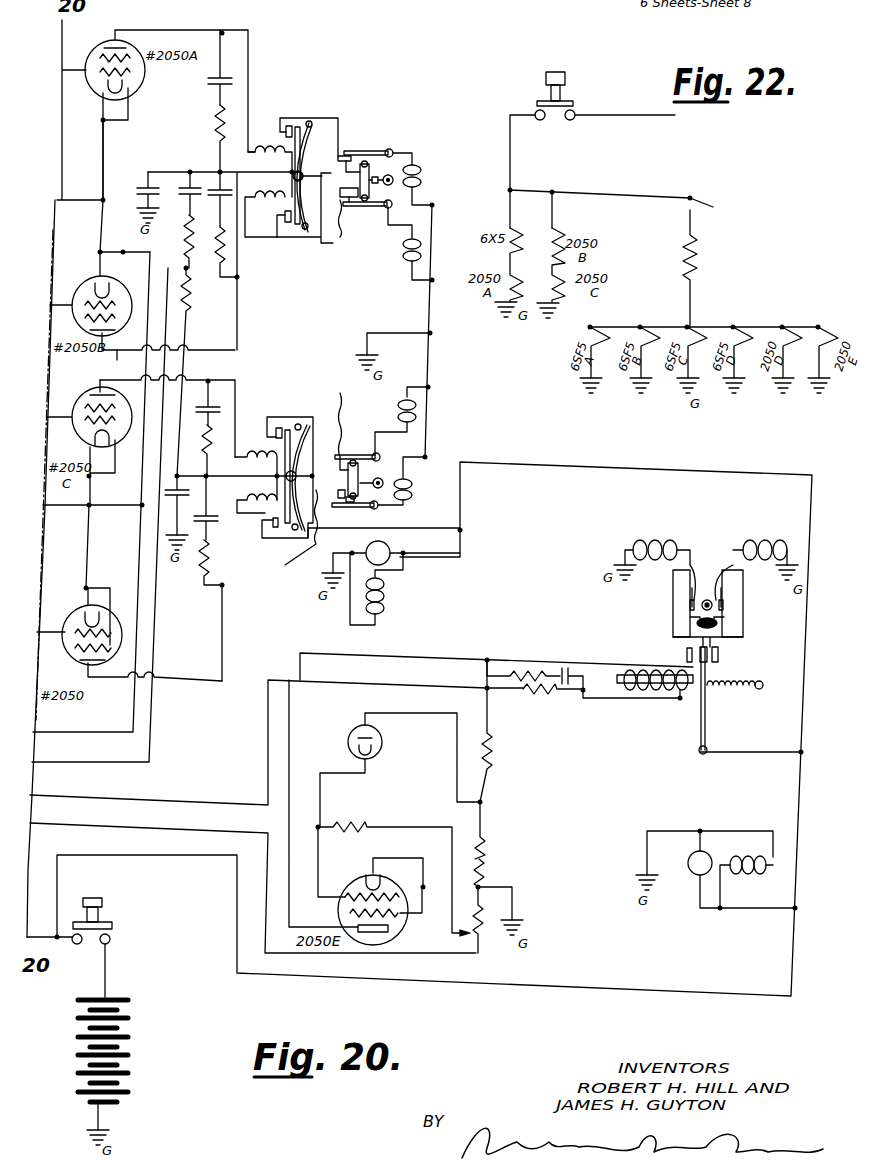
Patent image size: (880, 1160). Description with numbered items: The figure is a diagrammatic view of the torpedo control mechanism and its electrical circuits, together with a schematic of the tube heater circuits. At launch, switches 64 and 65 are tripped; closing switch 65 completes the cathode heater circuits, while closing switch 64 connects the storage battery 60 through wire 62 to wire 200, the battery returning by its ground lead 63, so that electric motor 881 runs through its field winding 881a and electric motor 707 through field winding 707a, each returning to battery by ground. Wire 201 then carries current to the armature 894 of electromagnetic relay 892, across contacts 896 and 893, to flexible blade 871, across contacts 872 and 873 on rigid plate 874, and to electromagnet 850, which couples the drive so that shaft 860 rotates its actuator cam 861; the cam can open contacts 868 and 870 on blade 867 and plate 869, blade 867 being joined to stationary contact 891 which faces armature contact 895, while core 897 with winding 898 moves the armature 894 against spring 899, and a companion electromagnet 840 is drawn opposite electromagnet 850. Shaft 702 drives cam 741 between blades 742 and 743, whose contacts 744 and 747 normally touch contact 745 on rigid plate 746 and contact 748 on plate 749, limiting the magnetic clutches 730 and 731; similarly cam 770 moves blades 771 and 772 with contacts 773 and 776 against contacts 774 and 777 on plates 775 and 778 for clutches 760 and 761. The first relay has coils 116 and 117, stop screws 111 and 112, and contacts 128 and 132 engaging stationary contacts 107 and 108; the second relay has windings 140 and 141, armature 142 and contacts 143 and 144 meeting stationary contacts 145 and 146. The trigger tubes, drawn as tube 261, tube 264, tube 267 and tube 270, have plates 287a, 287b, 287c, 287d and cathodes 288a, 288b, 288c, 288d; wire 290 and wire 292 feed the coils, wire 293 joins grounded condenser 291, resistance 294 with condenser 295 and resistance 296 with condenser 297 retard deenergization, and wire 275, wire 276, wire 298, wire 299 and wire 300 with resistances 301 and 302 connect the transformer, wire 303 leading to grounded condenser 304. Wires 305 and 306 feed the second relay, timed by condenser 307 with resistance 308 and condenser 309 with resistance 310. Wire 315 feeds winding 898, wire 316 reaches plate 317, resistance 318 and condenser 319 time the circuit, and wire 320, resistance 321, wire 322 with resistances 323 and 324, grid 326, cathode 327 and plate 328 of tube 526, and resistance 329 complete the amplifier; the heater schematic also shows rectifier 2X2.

In FIG. 20, the storage battery 60 is at (125, 1046).
In FIG. 20, the wire 62 is at (106, 968).
In FIG. 20, the ground lead 63 is at (104, 1118).
In FIG. 20, the switch 64 is at (98, 918).
In FIG. 22, the switch 65 is at (562, 93).
In FIG. 20, the stationary contact 107 is at (278, 132).
In FIG. 20, the stationary contact 108 is at (278, 220).
In FIG. 20, the stop screw 111 is at (312, 122).
In FIG. 20, the stop screw 112 is at (305, 230).
In FIG. 20, the relay coil 116 is at (279, 161).
In FIG. 20, the relay coil 117 is at (279, 184).
In FIG. 20, the contact 128 is at (297, 125).
In FIG. 20, the contact 132 is at (284, 240).
In FIG. 20, the relay winding 140 is at (268, 462).
In FIG. 20, the relay winding 141 is at (268, 482).
In FIG. 20, the armature 142 is at (305, 424).
In FIG. 20, the contact 143 is at (287, 428).
In FIG. 20, the contact 144 is at (296, 532).
In FIG. 20, the stationary contact 145 is at (272, 436).
In FIG. 20, the stationary contact 146 is at (270, 516).
In FIG. 20, the wire 200 is at (62, 890).
In FIG. 20, the wire 201 is at (735, 752).
In FIG. 20, the tube 261 is at (98, 85).
In FIG. 20, the tube 264 is at (88, 298).
In FIG. 20, the tube 267 is at (82, 404).
In FIG. 20, the tube 270 is at (78, 622).
In FIG. 20, the wire 275 is at (105, 160).
In FIG. 20, the conductor 276 is at (68, 200).
In FIG. 20, the plate 287a is at (140, 32).
In FIG. 20, the plate 287b is at (117, 352).
In FIG. 20, the plate 287c is at (100, 386).
In FIG. 20, the plate 287d is at (94, 680).
In FIG. 20, the cathode 288a is at (138, 100).
In FIG. 20, the cathode 288b is at (98, 252).
In FIG. 20, the cathode 288c is at (98, 478).
In FIG. 20, the cathode 288d is at (92, 605).
In FIG. 20, the wire 290 is at (249, 62).
In FIG. 20, the grounded condenser 291 is at (165, 178).
In FIG. 20, the wire 292 is at (238, 322).
In FIG. 20, the wire 293 is at (214, 170).
In FIG. 20, the resistance 294 is at (215, 124).
In FIG. 20, the condenser 295 is at (210, 94).
In FIG. 20, the resistance 296 is at (222, 212).
In FIG. 20, the condenser 297 is at (198, 208).
In FIG. 20, the wire 298 is at (138, 710).
In FIG. 20, the wire 299 is at (152, 650).
In FIG. 20, the wire 300 is at (185, 340).
In FIG. 20, the resistance 301 is at (185, 236).
In FIG. 20, the resistance 302 is at (190, 284).
In FIG. 20, the wire 303 is at (212, 504).
In FIG. 20, the grounded condenser 304 is at (170, 500).
In FIG. 20, the wire 305 is at (228, 372).
In FIG. 20, the wire 306 is at (226, 620).
In FIG. 20, the condenser 307 is at (200, 400).
In FIG. 20, the resistance 308 is at (200, 450).
In FIG. 20, the condenser 309 is at (212, 522).
In FIG. 20, the resistance 310 is at (198, 560).
In FIG. 20, the wire 315 is at (140, 800).
In FIG. 20, the wire 316 is at (430, 656).
In FIG. 20, the plate 317 is at (385, 930).
In FIG. 20, the resistance 318 is at (528, 672).
In FIG. 20, the condenser 319 is at (563, 668).
In FIG. 20, the wire 320 is at (170, 830).
In FIG. 20, the resistance 321 is at (482, 940).
In FIG. 20, the wire 322 is at (485, 870).
In FIG. 20, the resistance 323 is at (484, 850).
In FIG. 20, the resistance 324 is at (490, 762).
In FIG. 20, the grid 326 is at (352, 890).
In FIG. 20, the cathode 327 is at (367, 758).
In FIG. 20, the plate 328 is at (360, 725).
In FIG. 20, the resistance 329 is at (340, 824).
In FIG. 20, the tube 526 is at (382, 745).
In FIG. 20, the shaft 702 is at (393, 176).
In FIG. 20, the electric motor 707 is at (384, 546).
In FIG. 20, the field winding 707a is at (385, 610).
In FIG. 20, the magnetic clutch 730 is at (422, 172).
In FIG. 20, the magnetic clutch 731 is at (408, 262).
In FIG. 20, the actuator cam 741 is at (389, 184).
In FIG. 20, the flexible blade 742 is at (374, 208).
In FIG. 20, the flexible blade 743 is at (380, 152).
In FIG. 20, the contact 744 is at (348, 200).
In FIG. 20, the contact 745 is at (360, 190).
In FIG. 20, the rigid plate 746 is at (341, 238).
In FIG. 20, the contact 747 is at (352, 158).
In FIG. 20, the contact 748 is at (346, 150).
In FIG. 20, the plate 749 is at (338, 160).
In FIG. 20, the electromagnetic clutch 760 is at (418, 408).
In FIG. 20, the electromagnetic clutch 761 is at (412, 491).
In FIG. 20, the actuator cam 770 is at (368, 484).
In FIG. 20, the flexible contact blade 771 is at (370, 455).
In FIG. 20, the flexible contact blade 772 is at (370, 508).
In FIG. 20, the contact 773 is at (350, 456).
In FIG. 20, the contact 774 is at (347, 478).
In FIG. 20, the rigid plate 775 is at (340, 395).
In FIG. 20, the contact 776 is at (346, 498).
In FIG. 20, the contact 777 is at (342, 502).
In FIG. 20, the plate 778 is at (315, 540).
In FIG. 20, the coil 840 is at (642, 542).
In FIG. 20, the electromagnet 850 is at (758, 544).
In FIG. 20, the switch actuating shaft 860 is at (707, 598).
In FIG. 20, the actuator cam 861 is at (712, 628).
In FIG. 20, the flexible blade 867 is at (690, 622).
In FIG. 20, the contact 868 is at (688, 606).
In FIG. 20, the rigid plate 869 is at (696, 555).
In FIG. 20, the contact 870 is at (688, 590).
In FIG. 20, the flexible blade 871 is at (724, 622).
In FIG. 20, the contact 872 is at (724, 606).
In FIG. 20, the contact 873 is at (724, 590).
In FIG. 20, the rigid plate 874 is at (720, 560).
In FIG. 20, the electric motor 881 is at (688, 864).
In FIG. 20, the field winding 881a is at (735, 874).
In FIG. 20, the stationary contact 891 is at (685, 653).
In FIG. 20, the electromagnetic relay 892 is at (737, 711).
In FIG. 20, the stationary contact 893 is at (720, 660).
In FIG. 20, the armature 894 is at (700, 730).
In FIG. 20, the contact 895 is at (688, 660).
In FIG. 20, the contact 896 is at (710, 664).
In FIG. 20, the core 897 is at (675, 685).
In FIG. 20, the winding 898 is at (633, 690).
In FIG. 20, the spring 899 is at (745, 690).
In FIG. 22, the rectifier tube 2X2 is at (708, 200).